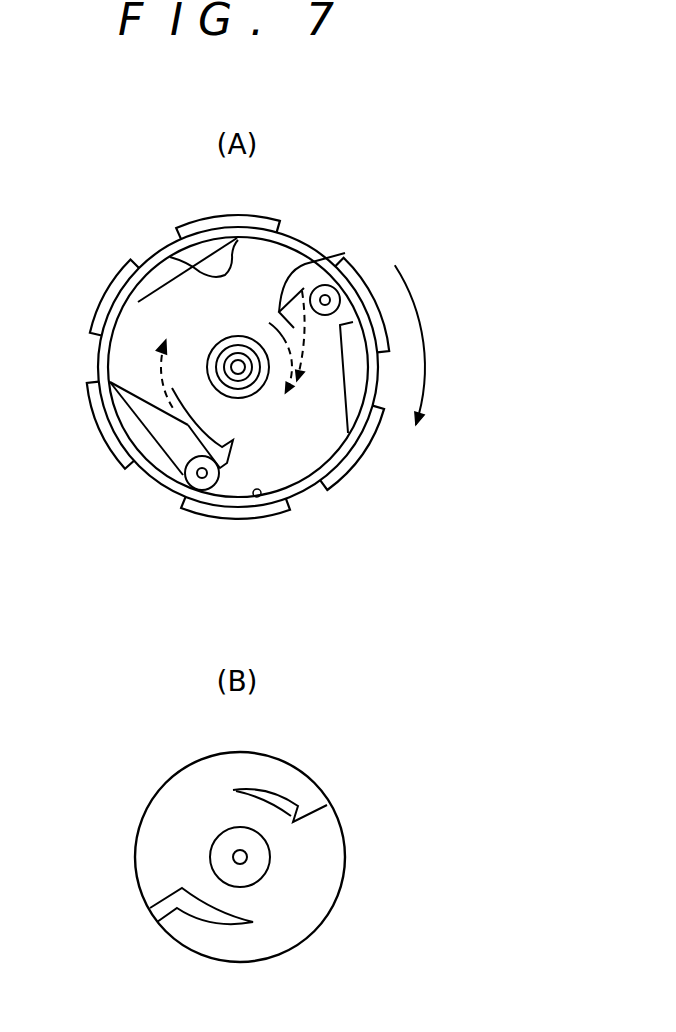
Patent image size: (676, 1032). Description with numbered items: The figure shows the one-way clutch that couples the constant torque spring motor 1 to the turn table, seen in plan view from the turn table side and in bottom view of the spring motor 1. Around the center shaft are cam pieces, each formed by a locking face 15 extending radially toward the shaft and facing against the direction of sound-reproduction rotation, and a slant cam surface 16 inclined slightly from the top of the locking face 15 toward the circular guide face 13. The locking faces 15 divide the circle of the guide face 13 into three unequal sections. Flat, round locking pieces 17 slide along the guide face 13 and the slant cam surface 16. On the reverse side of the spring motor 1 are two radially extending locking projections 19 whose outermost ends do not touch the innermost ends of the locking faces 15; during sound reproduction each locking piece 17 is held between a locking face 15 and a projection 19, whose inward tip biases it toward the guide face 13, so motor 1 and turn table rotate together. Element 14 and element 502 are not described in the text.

In FIG. 7B, the constant torque spring motor 1 is at (310, 943).
In FIG. 7A, the guide face 13 is at (259, 497).
In FIG. 7A, the plate 14 is at (286, 455).
In FIG. 7A, the locking face 15 is at (185, 478).
In FIG. 7A, the slant cam surface 16 is at (280, 291).
In FIG. 7A, the locking piece 17 is at (196, 492).
In FIG. 7A, the locking projection 19 is at (337, 253).
In FIG. 7B, the locking projection 19 is at (298, 806).
In FIG. 7A, the blade arm 502 is at (188, 425).